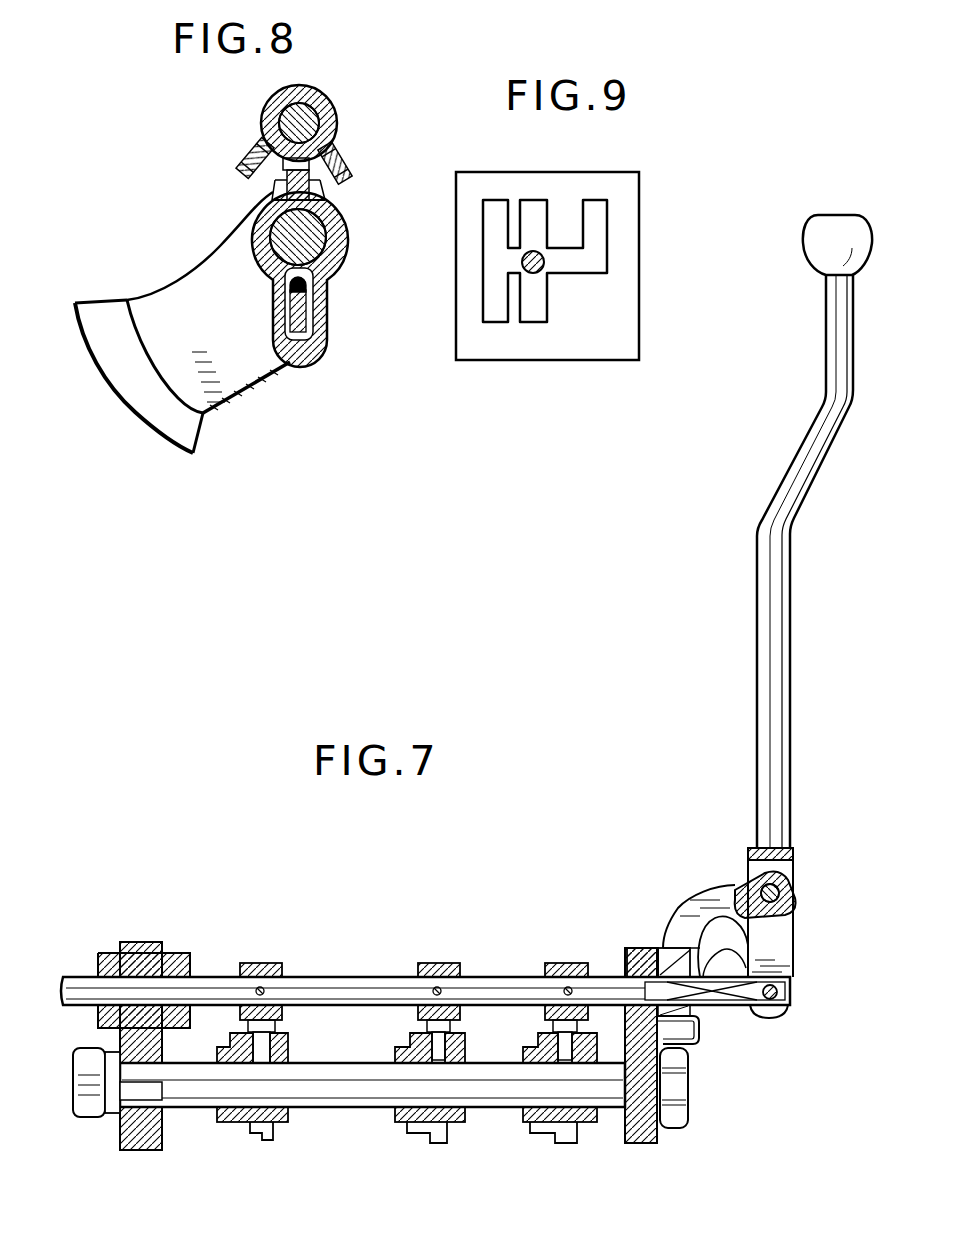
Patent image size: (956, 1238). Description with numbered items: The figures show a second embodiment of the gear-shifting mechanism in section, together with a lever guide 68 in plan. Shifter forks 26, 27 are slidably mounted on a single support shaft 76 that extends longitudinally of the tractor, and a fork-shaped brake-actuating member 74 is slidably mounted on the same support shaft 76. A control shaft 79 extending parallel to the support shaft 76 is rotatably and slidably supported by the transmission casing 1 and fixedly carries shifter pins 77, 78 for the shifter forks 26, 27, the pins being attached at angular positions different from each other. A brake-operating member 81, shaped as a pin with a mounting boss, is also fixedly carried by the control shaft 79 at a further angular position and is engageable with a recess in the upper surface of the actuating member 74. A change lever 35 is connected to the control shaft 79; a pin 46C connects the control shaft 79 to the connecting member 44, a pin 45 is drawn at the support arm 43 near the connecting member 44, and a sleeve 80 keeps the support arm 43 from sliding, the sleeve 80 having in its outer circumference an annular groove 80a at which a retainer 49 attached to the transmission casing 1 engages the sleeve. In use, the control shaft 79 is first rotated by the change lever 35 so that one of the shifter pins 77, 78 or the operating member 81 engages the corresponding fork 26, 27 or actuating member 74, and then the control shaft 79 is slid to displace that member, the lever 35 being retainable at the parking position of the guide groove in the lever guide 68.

In FIG. 7, the transmission casing 1 is at (645, 1123).
In FIG. 8, the shifter fork 26 is at (244, 323).
In FIG. 7, the shifter fork 26 is at (438, 1124).
In FIG. 8, the shifter fork 27 is at (244, 323).
In FIG. 7, the shifter fork 27 is at (273, 1128).
In FIG. 8, the brake-actuating member 74 is at (246, 386).
In FIG. 7, the brake-actuating member 74 is at (563, 1133).
In FIG. 9, the change lever 35 is at (543, 268).
In FIG. 7, the change lever 35 is at (830, 368).
In FIG. 7, the support arm 43 is at (700, 890).
In FIG. 7, the connecting member 44 is at (795, 860).
In FIG. 7, the pivot pin 45 is at (785, 896).
In FIG. 7, the pin 46C is at (768, 1015).
In FIG. 7, the retainer 49 is at (700, 1046).
In FIG. 9, the lever guide 68 is at (563, 343).
In FIG. 8, the support shaft 76 is at (307, 237).
In FIG. 7, the support shaft 76 is at (372, 1083).
In FIG. 8, the shifter pin 77 is at (290, 184).
In FIG. 7, the shifter pin 77 is at (457, 1034).
In FIG. 8, the shifter pin 78 is at (343, 170).
In FIG. 7, the shifter pin 78 is at (280, 1032).
In FIG. 8, the control shaft 79 is at (300, 122).
In FIG. 7, the control shaft 79 is at (385, 977).
In FIG. 7, the sleeve 80 is at (703, 976).
In FIG. 7, the annular groove 80a is at (692, 950).
In FIG. 8, the brake-operating member 81 is at (258, 160).
In FIG. 7, the brake-operating member 81 is at (576, 1034).